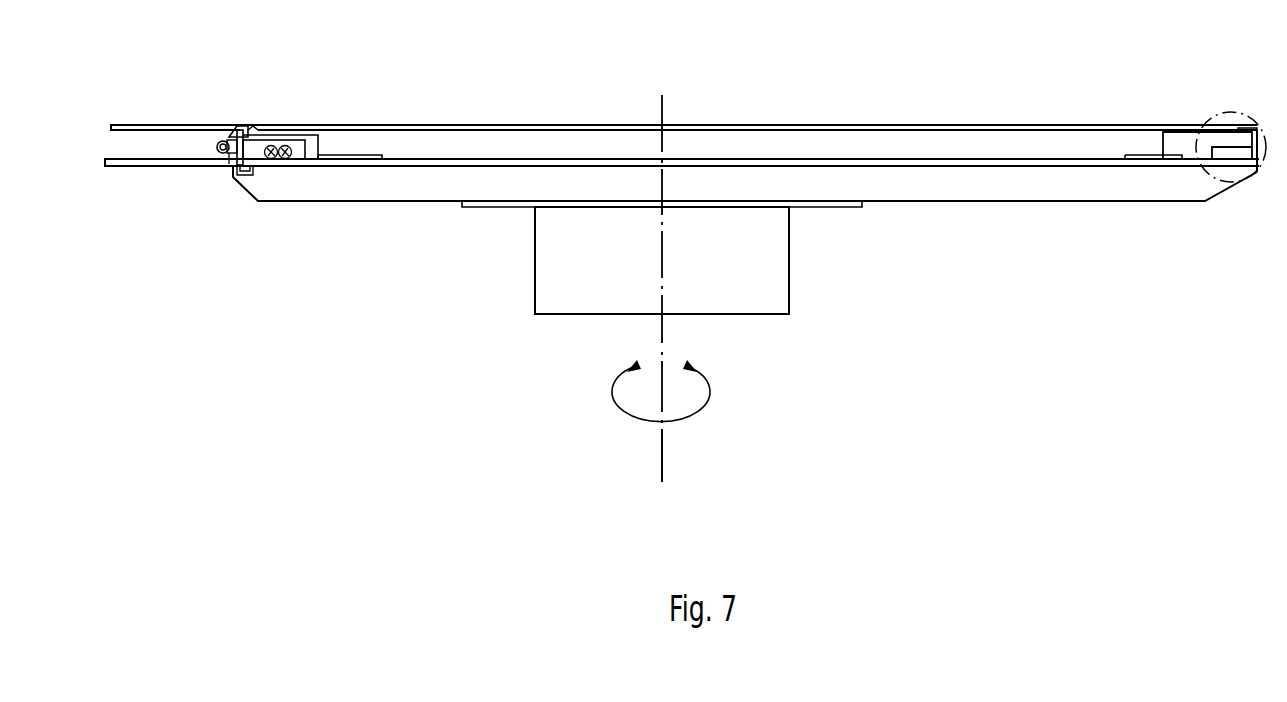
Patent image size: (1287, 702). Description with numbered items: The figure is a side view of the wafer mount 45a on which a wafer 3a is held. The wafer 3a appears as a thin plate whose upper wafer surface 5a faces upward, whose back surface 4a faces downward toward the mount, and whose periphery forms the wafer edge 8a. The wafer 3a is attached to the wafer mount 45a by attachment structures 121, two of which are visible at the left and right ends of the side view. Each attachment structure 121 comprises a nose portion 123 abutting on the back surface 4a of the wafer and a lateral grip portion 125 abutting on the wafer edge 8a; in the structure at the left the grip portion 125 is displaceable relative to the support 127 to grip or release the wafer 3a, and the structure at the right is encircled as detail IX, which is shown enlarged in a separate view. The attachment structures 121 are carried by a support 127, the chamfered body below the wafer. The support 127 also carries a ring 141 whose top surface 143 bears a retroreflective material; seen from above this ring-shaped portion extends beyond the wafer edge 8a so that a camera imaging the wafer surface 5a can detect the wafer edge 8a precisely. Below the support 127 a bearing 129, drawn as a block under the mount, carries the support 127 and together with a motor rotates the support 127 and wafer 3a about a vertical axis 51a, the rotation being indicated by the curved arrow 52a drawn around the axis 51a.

The wafer 3a is at (689, 102).
The back surface of the wafer 4a is at (1028, 130).
The wafer surface 5a is at (497, 124).
The wafer edge 8a is at (110, 124).
The wafer mount 45a is at (331, 232).
The axis 51a is at (663, 447).
The arrow 52a is at (710, 387).
The attachment structure 121 is at (244, 111).
The nose portion 123 is at (254, 127).
The grip portion 125 is at (236, 127).
The support 127 is at (968, 203).
The bearing 129 is at (789, 268).
The ring 141 is at (141, 168).
The top surface 143 is at (123, 158).
The detail IX is at (1219, 112).